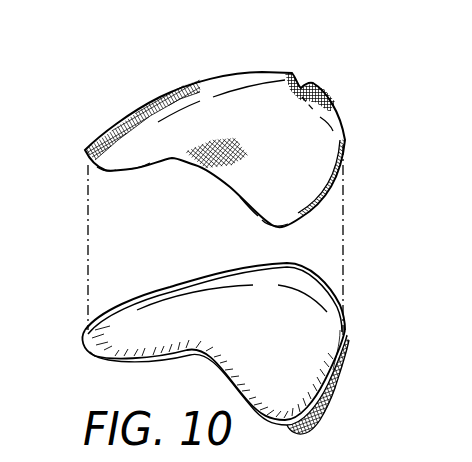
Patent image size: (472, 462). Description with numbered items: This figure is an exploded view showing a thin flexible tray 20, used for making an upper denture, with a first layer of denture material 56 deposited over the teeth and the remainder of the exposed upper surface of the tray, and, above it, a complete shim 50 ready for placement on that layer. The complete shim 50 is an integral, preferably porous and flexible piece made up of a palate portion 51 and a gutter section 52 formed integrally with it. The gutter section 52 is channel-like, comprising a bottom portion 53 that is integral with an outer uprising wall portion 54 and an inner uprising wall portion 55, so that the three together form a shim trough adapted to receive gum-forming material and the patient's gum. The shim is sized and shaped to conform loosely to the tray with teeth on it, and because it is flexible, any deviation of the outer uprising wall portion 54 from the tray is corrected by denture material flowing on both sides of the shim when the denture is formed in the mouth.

The tray 20 is at (350, 344).
The complete shim 50 is at (278, 40).
The palate portion 51 is at (200, 167).
The gutter section 52 is at (143, 141).
The bottom portion 53 is at (108, 170).
The outer uprising wall portion 54 is at (85, 149).
The inner uprising wall portion 55 is at (142, 168).
The first layer of denture material 56 is at (193, 347).